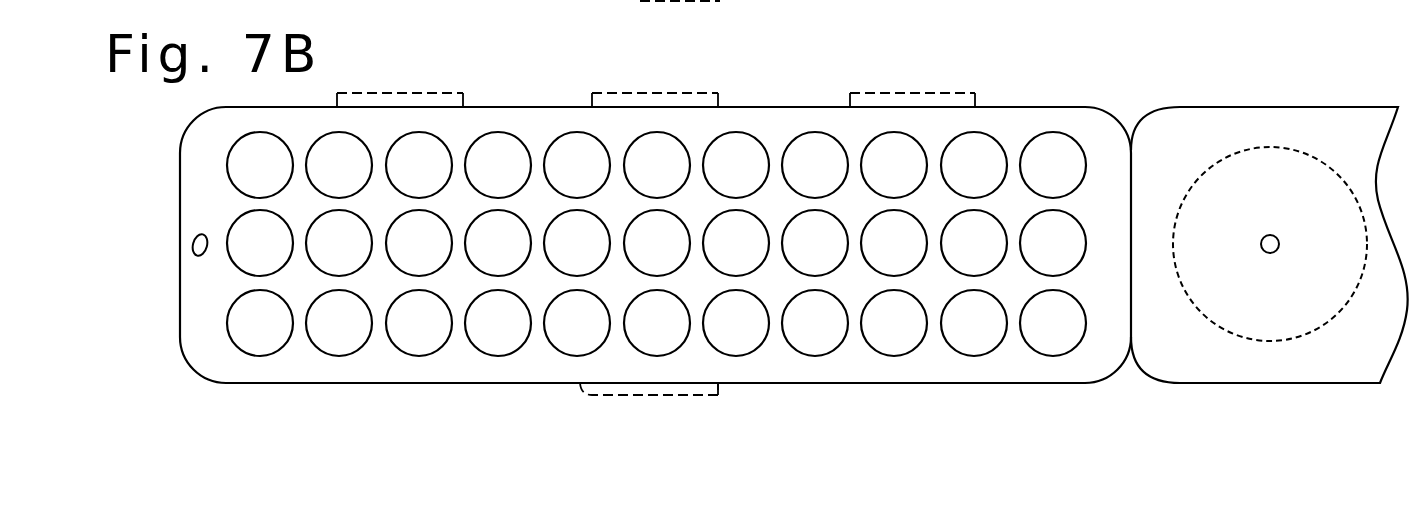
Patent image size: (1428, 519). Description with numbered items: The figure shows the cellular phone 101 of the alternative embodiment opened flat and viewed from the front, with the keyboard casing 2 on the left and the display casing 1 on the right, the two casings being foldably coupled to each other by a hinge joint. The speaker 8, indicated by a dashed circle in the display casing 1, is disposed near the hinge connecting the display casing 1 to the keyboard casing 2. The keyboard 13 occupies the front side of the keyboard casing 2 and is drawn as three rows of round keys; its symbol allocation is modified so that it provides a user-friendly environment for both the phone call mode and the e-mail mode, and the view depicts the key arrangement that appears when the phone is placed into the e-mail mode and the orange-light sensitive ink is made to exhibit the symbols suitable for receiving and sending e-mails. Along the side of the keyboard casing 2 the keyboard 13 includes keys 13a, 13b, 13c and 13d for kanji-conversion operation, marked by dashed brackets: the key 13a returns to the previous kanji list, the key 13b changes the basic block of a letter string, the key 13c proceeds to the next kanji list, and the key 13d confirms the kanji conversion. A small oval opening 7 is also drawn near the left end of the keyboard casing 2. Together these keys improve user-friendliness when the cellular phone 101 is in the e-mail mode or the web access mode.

The display casing 1 is at (1245, 126).
The keyboard casing 2 is at (1083, 121).
The indicator lamp 7 is at (193, 252).
The speaker 8 is at (1308, 156).
The keyboard 13 is at (881, 0).
The key 13a is at (390, 93).
The key 13b is at (645, 93).
The key 13c is at (905, 93).
The key 13d is at (653, 397).
The cellular phone 101 is at (794, 192).